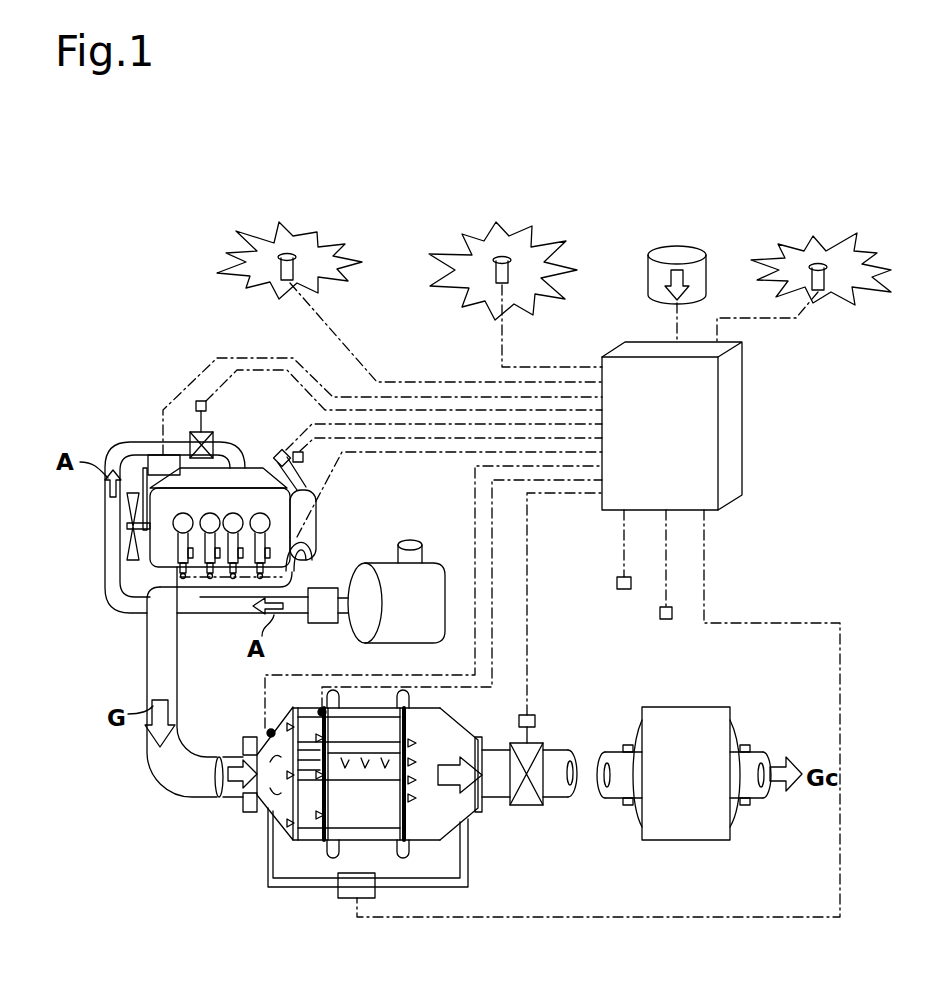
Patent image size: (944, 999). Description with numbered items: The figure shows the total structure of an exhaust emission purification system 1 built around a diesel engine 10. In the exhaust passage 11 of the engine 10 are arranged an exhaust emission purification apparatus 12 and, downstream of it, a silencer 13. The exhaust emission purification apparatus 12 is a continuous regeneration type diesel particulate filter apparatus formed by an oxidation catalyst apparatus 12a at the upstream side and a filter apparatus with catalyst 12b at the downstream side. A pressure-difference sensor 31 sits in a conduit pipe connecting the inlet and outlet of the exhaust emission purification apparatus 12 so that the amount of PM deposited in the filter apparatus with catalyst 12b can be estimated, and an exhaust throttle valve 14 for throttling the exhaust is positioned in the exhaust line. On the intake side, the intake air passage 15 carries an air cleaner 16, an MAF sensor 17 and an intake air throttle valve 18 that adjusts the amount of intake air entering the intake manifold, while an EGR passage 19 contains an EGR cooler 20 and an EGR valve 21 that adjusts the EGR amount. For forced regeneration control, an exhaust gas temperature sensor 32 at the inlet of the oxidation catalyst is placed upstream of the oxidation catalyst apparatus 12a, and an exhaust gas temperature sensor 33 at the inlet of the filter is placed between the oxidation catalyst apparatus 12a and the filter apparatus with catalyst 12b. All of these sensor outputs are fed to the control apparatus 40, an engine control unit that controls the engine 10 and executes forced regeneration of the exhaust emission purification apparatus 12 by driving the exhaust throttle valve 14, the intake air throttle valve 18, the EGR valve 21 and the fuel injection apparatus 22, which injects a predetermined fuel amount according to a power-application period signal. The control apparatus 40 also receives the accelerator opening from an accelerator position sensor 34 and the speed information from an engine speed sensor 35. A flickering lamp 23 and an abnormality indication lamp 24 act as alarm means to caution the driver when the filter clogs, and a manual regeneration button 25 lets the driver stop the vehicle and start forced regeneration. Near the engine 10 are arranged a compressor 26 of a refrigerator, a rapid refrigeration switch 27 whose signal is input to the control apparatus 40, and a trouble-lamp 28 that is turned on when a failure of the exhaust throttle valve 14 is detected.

The exhaust emission purification system 1 is at (627, 258).
The diesel engine 10 is at (152, 488).
The exhaust passage 11 is at (173, 783).
The exhaust emission purification apparatus 12 is at (428, 838).
The oxidation catalyst apparatus 12a is at (307, 815).
The filter apparatus with catalyst 12b is at (375, 812).
The silencer 13 is at (688, 818).
The exhaust throttle valve 14 is at (543, 748).
The intake air passage 15 is at (104, 510).
The air cleaner 16 is at (438, 604).
The MAF sensor 17 is at (324, 588).
The intake air throttle valve 18 is at (196, 403).
The EGR passage 19 is at (315, 486).
The EGR cooler 20 is at (316, 520).
The EGR valve 21 is at (278, 452).
The fuel injection apparatus 22 is at (178, 547).
The flickering lamp 23 is at (287, 253).
The abnormality indication lamp 24 is at (502, 256).
The manual regeneration button 25 is at (693, 250).
The compressor of refrigerator 26 is at (153, 455).
The rapid refrigeration switch 27 is at (624, 591).
The trouble-lamp 28 is at (818, 262).
The pressure-difference sensor 31 is at (350, 899).
The exhaust gas temperature sensor at inlet of the oxidation catalyst 32 is at (268, 729).
The exhaust gas temperature sensor at inlet of the filter 33 is at (320, 709).
The accelerator position sensor 34 is at (666, 621).
The engine speed sensor 35 is at (297, 452).
The control apparatus 40 is at (731, 440).